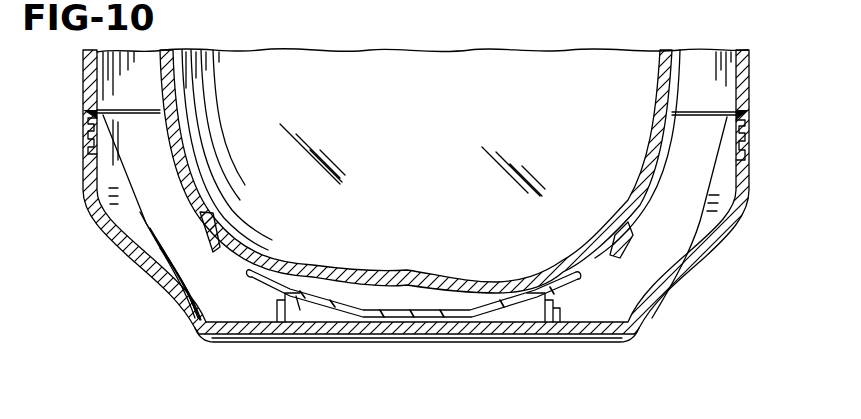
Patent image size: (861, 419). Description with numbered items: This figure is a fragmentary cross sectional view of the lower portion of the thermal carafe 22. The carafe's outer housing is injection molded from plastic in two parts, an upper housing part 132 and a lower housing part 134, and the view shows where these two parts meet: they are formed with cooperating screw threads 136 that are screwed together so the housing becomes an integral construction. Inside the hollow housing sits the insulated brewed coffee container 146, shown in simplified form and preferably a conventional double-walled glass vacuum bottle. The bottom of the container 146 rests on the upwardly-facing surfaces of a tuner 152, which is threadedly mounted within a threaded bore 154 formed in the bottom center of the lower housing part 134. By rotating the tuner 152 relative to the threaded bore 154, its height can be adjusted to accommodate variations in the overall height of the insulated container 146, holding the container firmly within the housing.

The thermal carafe 22 is at (762, 96).
The upper housing part 132 is at (88, 68).
The lower housing part 134 is at (98, 199).
The cooperating screw threads 136 is at (92, 138).
The insulated brewed coffee container 146 is at (420, 119).
The tuner 152 is at (322, 324).
The threaded bore 154 is at (527, 316).